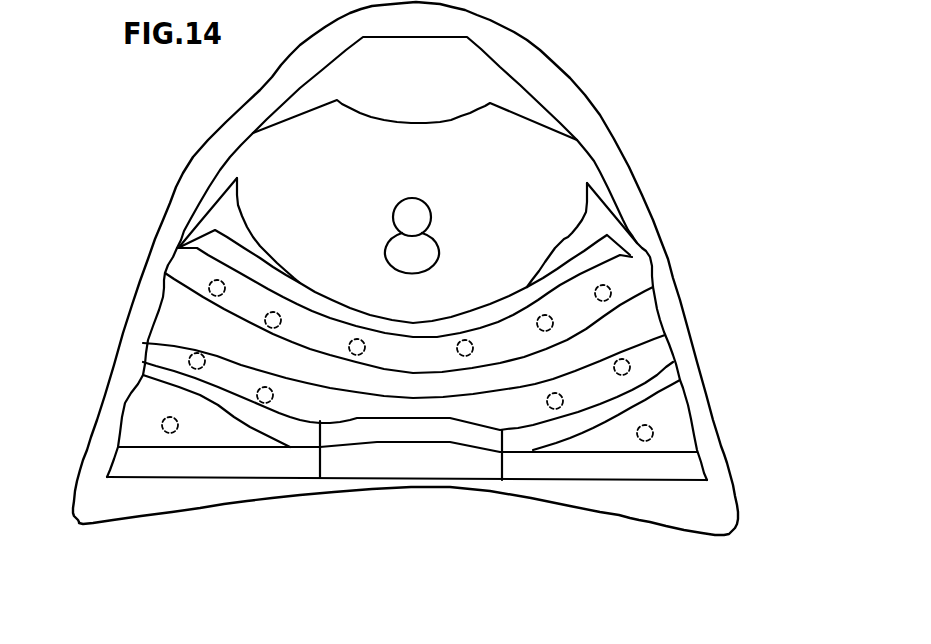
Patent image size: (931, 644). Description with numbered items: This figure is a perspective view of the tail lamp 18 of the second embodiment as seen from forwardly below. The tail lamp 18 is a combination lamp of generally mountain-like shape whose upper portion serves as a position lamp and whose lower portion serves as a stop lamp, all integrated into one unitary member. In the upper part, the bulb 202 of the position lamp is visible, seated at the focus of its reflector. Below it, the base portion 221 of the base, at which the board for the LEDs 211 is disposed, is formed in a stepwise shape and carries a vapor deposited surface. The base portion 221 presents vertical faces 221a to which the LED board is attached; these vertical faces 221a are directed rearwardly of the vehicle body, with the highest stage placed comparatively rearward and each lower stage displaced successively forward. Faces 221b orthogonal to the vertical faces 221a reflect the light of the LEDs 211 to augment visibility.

The tail lamp 18 is at (634, 98).
The bulb 202 is at (418, 212).
The base portion 221 is at (670, 331).
The vertical faces 221a is at (672, 298).
The faces 221b is at (172, 297).
The LEDs 211 is at (680, 424).